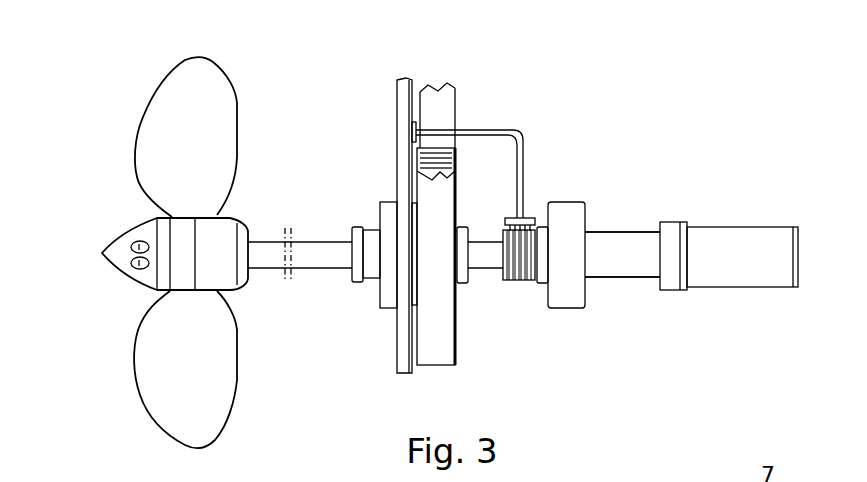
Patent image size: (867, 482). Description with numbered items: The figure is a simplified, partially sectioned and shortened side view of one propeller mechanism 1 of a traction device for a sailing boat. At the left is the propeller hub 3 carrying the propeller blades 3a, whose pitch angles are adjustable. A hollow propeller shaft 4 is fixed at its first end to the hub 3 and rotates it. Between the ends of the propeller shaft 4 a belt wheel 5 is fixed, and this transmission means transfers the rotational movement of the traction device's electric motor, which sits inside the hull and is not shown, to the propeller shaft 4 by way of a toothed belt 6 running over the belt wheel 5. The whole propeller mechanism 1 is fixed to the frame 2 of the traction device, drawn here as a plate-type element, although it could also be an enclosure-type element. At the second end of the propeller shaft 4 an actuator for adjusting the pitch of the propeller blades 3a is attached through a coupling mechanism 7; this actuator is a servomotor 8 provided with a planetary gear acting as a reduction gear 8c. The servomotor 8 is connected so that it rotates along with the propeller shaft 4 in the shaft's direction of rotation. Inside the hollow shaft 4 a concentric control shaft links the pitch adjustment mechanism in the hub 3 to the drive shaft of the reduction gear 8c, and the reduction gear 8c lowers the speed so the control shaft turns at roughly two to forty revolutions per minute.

The propeller mechanism 1 is at (614, 76).
The frame 2 is at (403, 110).
The propeller hub 3 is at (264, 194).
The propeller blades 3a is at (158, 105).
The propeller shaft 4 is at (312, 245).
The belt wheel 5 is at (455, 327).
The toothed belt 6 is at (448, 110).
The coupling mechanism 7 is at (565, 184).
The servomotor 8 is at (765, 237).
The reduction gear 8c is at (643, 279).